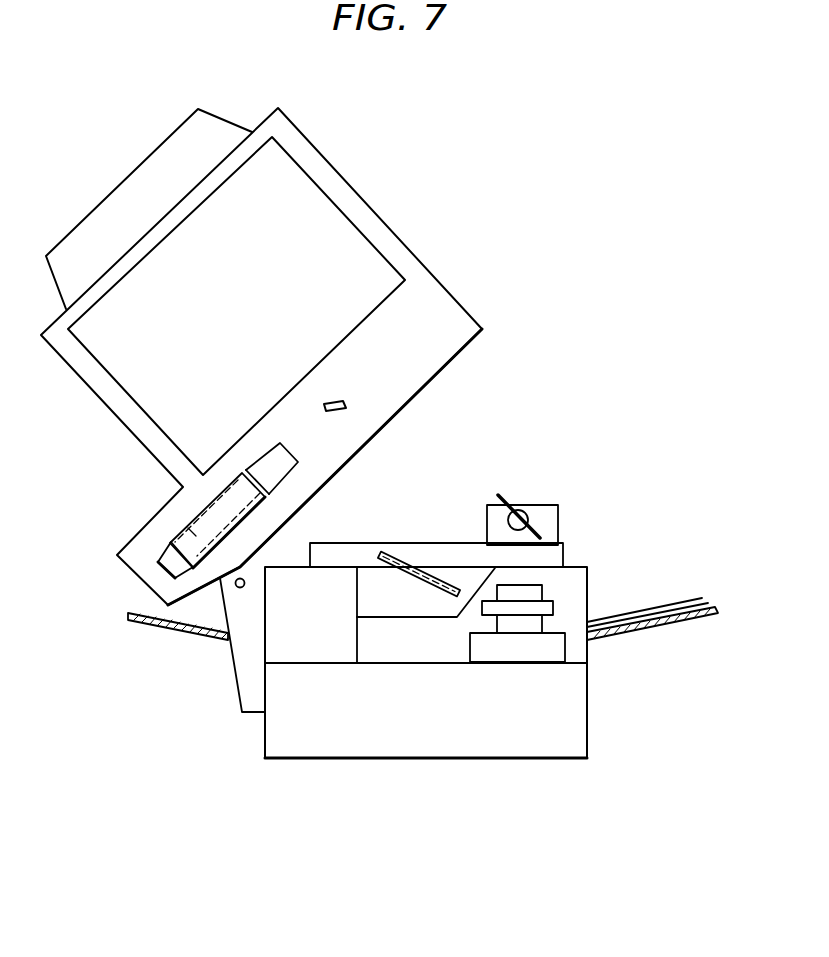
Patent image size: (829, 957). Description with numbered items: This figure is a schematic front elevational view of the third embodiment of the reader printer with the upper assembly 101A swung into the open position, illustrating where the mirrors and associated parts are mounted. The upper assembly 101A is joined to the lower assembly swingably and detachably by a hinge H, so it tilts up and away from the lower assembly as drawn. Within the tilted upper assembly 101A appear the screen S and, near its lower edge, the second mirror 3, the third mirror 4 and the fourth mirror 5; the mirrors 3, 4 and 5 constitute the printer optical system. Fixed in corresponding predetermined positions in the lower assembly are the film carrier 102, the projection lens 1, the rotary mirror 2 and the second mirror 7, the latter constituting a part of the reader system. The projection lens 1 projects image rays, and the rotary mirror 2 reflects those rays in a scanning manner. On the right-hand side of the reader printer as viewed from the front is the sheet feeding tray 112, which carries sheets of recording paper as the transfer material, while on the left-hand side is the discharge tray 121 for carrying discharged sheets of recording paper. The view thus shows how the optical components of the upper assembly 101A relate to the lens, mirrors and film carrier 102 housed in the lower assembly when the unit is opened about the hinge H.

The upper assembly 101A is at (447, 283).
The display screen S is at (292, 218).
The fourth mirror 5 is at (345, 405).
The second mirror 3 is at (195, 530).
The third mirror 4 is at (167, 560).
The hinge H is at (236, 587).
The discharge tray 121 is at (207, 635).
The film carrier 102 is at (505, 655).
The second mirror 7 is at (395, 559).
The rotary mirror 2 is at (507, 500).
The projection lens 1 is at (555, 602).
The sheet feeding tray 112 is at (643, 628).